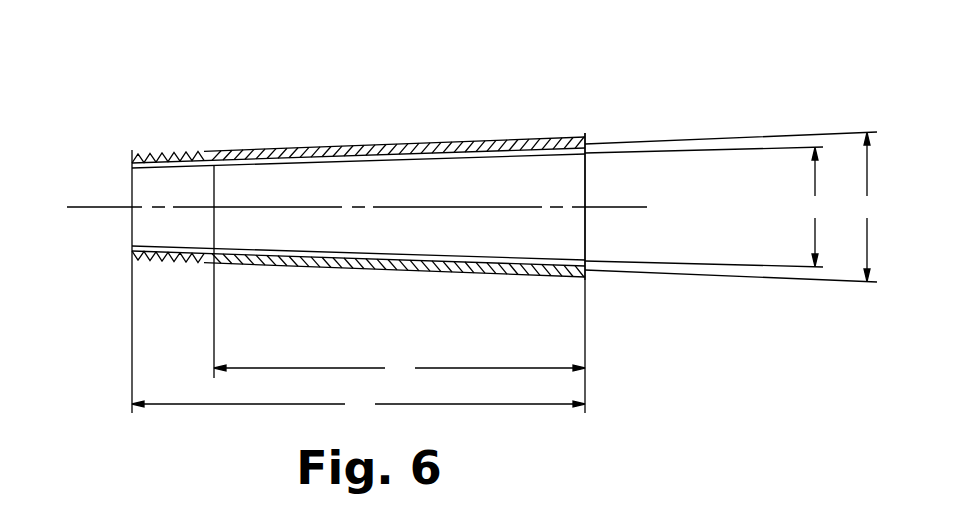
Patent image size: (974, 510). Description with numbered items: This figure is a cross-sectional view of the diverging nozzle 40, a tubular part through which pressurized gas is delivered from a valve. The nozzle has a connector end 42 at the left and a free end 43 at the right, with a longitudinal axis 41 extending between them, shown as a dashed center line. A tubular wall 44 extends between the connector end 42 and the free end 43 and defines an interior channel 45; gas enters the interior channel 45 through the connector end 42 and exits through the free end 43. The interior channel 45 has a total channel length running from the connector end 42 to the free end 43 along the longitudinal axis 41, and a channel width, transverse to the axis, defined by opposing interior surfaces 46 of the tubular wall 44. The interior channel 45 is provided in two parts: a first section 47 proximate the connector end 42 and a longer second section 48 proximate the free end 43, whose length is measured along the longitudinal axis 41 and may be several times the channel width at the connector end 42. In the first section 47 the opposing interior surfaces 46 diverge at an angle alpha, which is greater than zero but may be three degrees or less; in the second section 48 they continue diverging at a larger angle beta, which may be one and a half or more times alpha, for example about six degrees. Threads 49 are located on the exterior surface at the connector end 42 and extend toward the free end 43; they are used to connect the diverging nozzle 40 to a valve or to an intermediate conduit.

The diverging nozzle 40 is at (562, 77).
The longitudinal axis 41 is at (76, 210).
The connector end 42 is at (132, 178).
The free end 43 is at (587, 167).
The tubular wall 44 is at (368, 270).
The interior channel 45 is at (163, 186).
The opposing interior surfaces 46 is at (443, 259).
The first section 47 is at (217, 131).
The second section 48 is at (217, 131).
The threads 49 is at (174, 263).